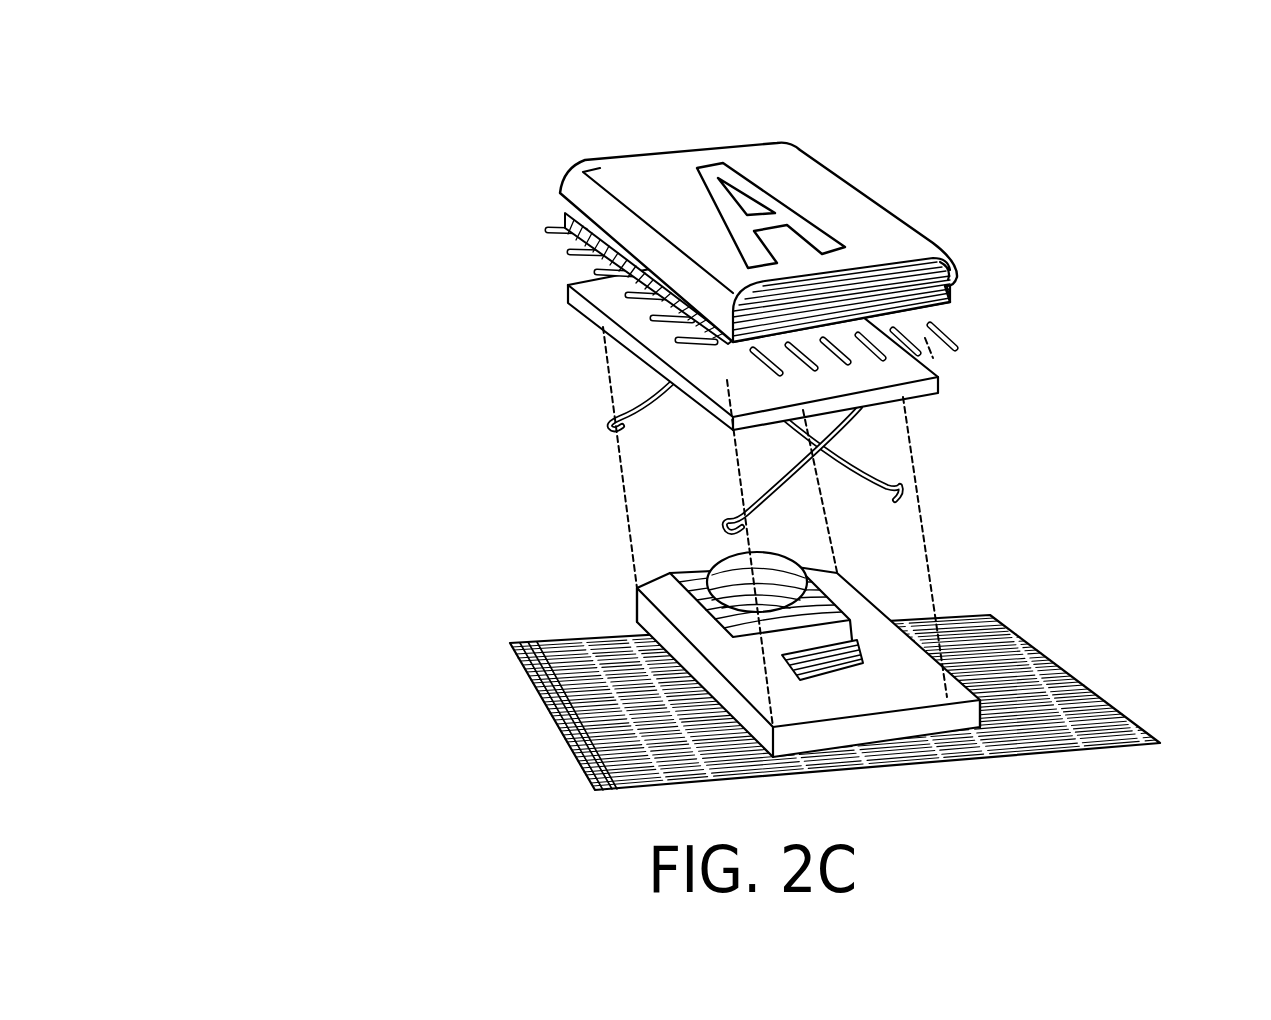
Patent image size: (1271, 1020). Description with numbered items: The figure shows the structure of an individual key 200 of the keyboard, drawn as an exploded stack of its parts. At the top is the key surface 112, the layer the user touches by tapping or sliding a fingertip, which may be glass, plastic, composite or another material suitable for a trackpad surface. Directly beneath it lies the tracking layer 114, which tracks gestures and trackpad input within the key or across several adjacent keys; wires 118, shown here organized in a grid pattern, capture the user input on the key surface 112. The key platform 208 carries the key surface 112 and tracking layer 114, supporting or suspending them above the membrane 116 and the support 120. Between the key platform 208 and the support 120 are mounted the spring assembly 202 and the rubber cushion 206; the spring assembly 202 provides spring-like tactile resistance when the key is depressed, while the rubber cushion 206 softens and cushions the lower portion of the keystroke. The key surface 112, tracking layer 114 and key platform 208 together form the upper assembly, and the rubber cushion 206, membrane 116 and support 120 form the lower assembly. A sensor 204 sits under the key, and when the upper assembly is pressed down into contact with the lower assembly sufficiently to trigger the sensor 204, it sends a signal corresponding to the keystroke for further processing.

The individual key 200 is at (706, 415).
The key surface 112 is at (850, 202).
The wires 118 is at (538, 238).
The tracking layer 114 is at (953, 320).
The key platform 208 is at (947, 380).
The spring assembly 202 is at (870, 468).
The rubber cushion 206 is at (705, 562).
The membrane 116 is at (637, 602).
The sensor 204 is at (857, 652).
The support 120 is at (527, 672).